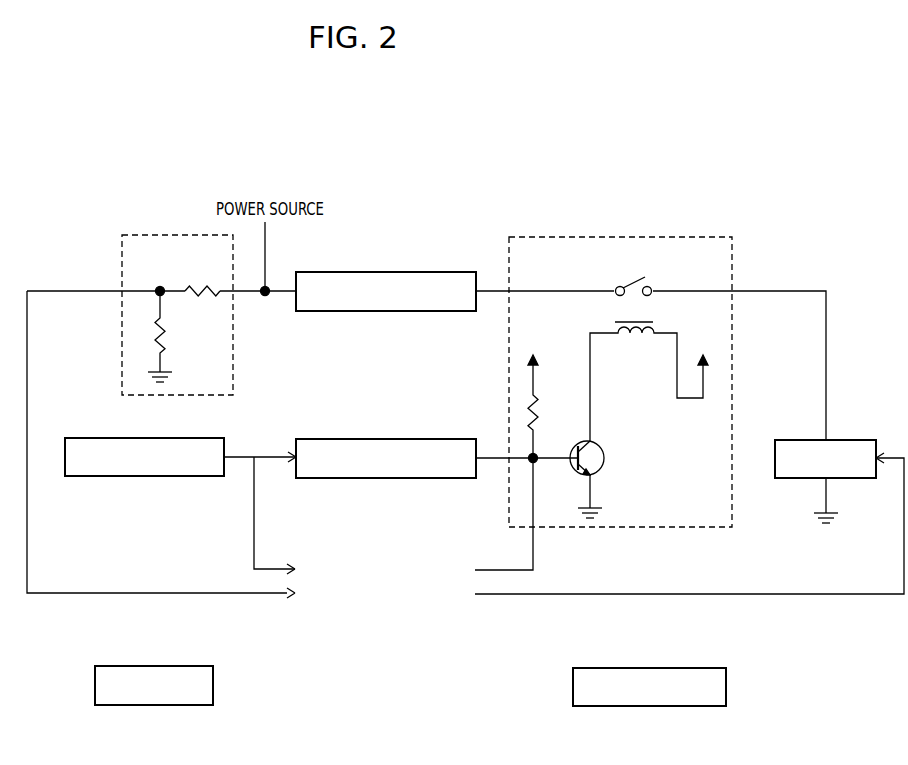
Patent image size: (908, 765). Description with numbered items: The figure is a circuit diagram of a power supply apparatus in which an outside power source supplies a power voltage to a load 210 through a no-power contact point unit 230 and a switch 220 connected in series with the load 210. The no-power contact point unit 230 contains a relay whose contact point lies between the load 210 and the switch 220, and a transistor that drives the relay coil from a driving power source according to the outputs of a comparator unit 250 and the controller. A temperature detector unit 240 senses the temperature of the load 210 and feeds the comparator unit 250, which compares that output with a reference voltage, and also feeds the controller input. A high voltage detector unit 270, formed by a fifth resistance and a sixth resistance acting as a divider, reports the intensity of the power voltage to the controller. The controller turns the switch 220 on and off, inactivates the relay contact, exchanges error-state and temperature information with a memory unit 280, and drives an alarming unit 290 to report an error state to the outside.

The load 210 is at (333, 272).
The switch 220 is at (862, 440).
The no-power contact point unit 230 is at (711, 237).
The temperature detector unit 240 is at (70, 438).
The comparator unit 250 is at (409, 551).
The high voltage detector unit 270 is at (140, 235).
The memory unit 280 is at (102, 666).
The alarming unit 290 is at (715, 668).